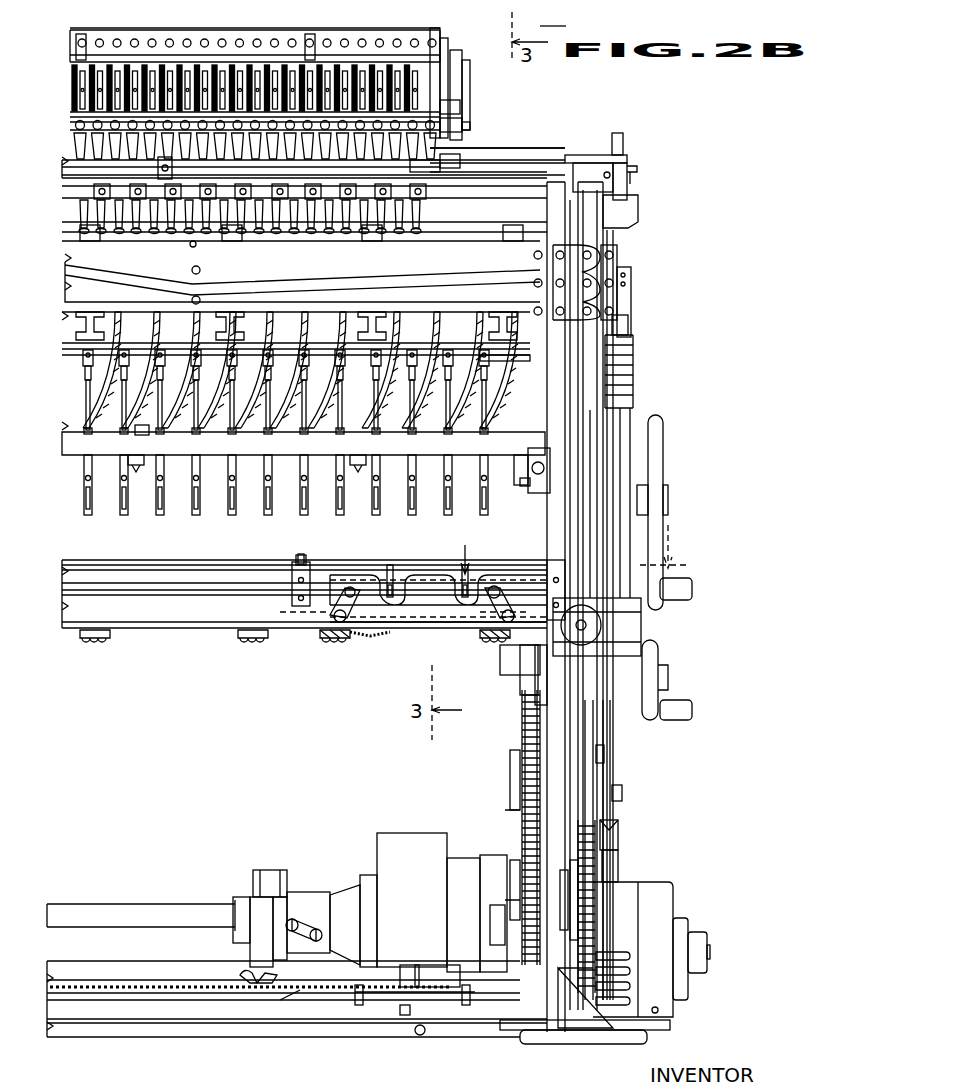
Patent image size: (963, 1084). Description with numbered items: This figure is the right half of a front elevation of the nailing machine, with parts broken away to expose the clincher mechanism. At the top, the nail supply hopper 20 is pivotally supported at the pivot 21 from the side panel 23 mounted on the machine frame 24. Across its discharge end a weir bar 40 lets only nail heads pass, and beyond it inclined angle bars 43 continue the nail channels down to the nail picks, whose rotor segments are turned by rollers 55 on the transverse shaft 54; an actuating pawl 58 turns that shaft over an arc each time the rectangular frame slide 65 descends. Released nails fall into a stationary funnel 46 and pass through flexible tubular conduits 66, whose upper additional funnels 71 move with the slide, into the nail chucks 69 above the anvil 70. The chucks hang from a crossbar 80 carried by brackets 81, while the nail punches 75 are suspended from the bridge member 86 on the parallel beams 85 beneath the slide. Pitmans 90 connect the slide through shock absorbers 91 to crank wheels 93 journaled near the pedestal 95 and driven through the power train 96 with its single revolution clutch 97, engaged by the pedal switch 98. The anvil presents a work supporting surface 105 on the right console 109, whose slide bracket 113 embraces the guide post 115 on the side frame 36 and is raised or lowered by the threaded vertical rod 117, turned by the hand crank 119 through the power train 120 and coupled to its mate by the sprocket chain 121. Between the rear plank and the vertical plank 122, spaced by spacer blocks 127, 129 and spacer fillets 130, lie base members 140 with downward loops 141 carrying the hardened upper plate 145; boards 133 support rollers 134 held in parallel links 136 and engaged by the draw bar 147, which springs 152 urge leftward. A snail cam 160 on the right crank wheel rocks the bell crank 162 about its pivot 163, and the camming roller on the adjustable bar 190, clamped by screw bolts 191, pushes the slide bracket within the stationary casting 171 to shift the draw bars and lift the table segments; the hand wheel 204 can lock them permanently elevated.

The nail supply hopper 20 is at (300, 36).
The hopper pivot 21 is at (450, 66).
The side panel 23 is at (460, 80).
The machine frame 24 is at (555, 155).
The right side frame 36 is at (568, 436).
The weir bar 40 is at (148, 35).
The angle bars 43 is at (72, 94).
The funnel 46 is at (88, 142).
The transverse shaft 54 is at (460, 106).
The rollers 55 is at (78, 118).
The actuating pawl 58 is at (462, 128).
The rectangular frame slide 65 is at (160, 264).
The flexible tubular conduits 66 is at (130, 410).
The nail chucks 69 is at (94, 512).
The anvil 70 is at (120, 562).
The additional funnels 71 is at (78, 214).
The nail punches 75 is at (275, 416).
The crossbar 80 is at (75, 445).
The brackets 81 is at (530, 494).
The parallel beams 85 is at (76, 320).
The bridge member 86 is at (530, 358).
The pitmans 90 is at (625, 468).
The shock absorbers 91 is at (650, 380).
The crank wheels 93 is at (605, 930).
The pedestal 95 is at (238, 1040).
The power train 96 is at (504, 808).
The single revolution clutch 97 is at (316, 900).
The pedal switch 98 is at (430, 965).
The work supporting surface 105 is at (232, 568).
The right console 109 is at (525, 690).
The slide bracket 113 is at (510, 672).
The guide post 115 is at (515, 765).
The threaded vertical rod 117 is at (515, 740).
The hand crank 119 is at (668, 498).
The power train 120 is at (610, 532).
The sprocket chain 121 is at (155, 980).
The vertical plank 122 is at (190, 616).
The spacer blocks 127 is at (555, 562).
The spacer blocks 129 is at (306, 562).
The spacer fillets 130 is at (418, 540).
The boards 133 is at (235, 636).
The rollers 134 is at (282, 610).
The parallel links 136 is at (360, 572).
The base members 140 is at (440, 606).
The downward loops 141 is at (422, 606).
The upper plate 145 is at (318, 555).
The draw bar 147 is at (430, 626).
The springs 152 is at (395, 636).
The snail cam 160 is at (595, 912).
The bell crank 162 is at (568, 822).
The bell crank pivot 163 is at (622, 800).
The stationary casting 171 is at (630, 608).
The adjustable bar 190 is at (596, 762).
The screw bolts 191 is at (612, 735).
The hand wheel 204 is at (588, 628).